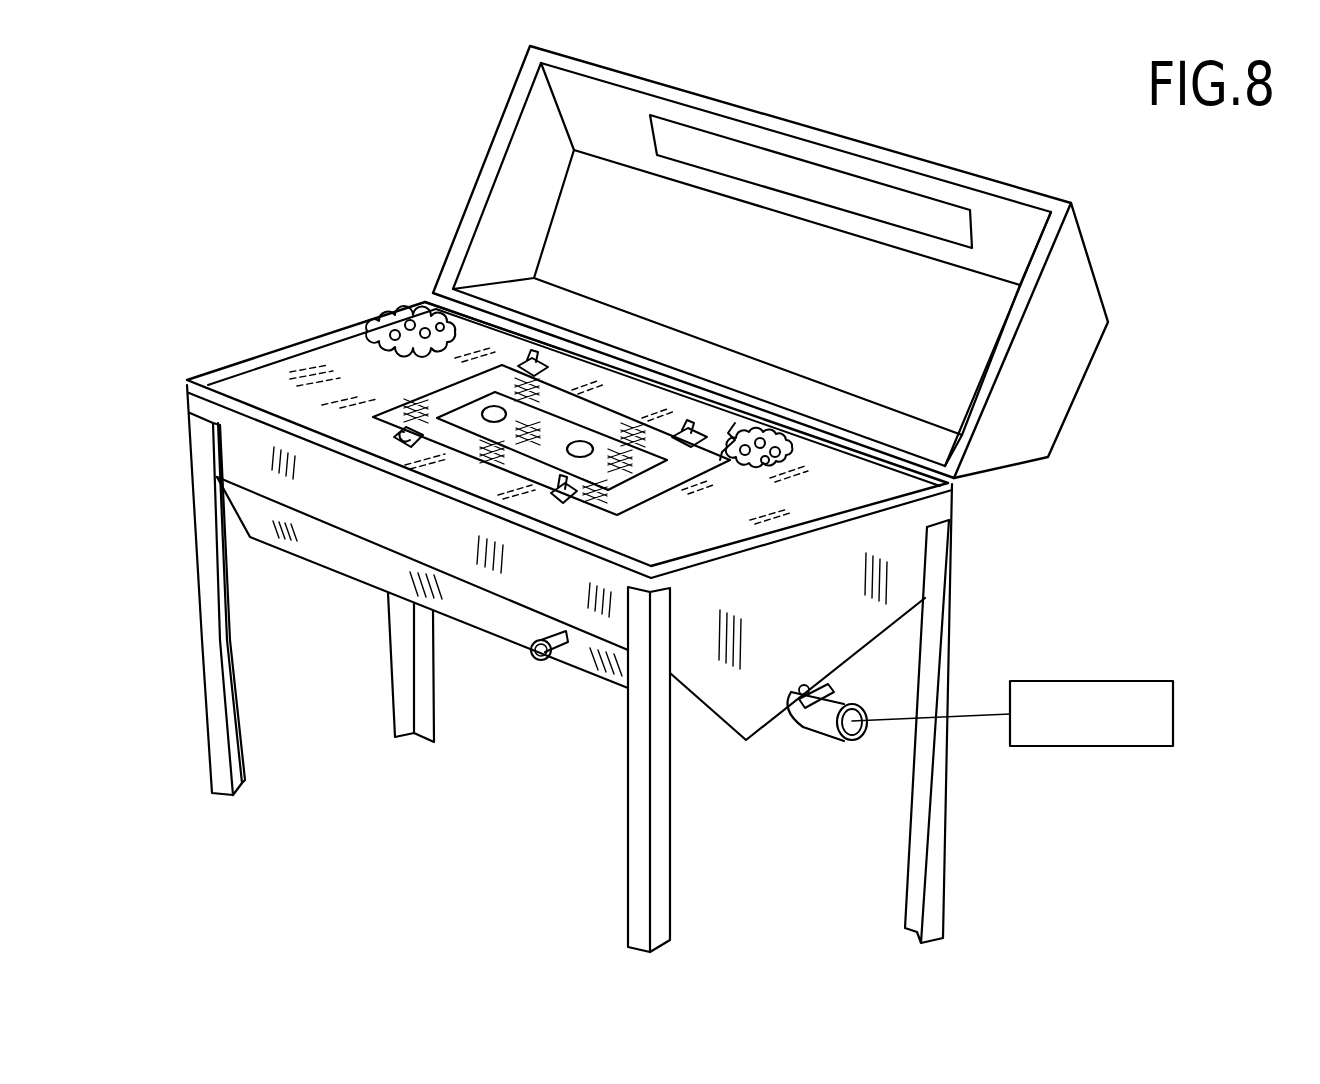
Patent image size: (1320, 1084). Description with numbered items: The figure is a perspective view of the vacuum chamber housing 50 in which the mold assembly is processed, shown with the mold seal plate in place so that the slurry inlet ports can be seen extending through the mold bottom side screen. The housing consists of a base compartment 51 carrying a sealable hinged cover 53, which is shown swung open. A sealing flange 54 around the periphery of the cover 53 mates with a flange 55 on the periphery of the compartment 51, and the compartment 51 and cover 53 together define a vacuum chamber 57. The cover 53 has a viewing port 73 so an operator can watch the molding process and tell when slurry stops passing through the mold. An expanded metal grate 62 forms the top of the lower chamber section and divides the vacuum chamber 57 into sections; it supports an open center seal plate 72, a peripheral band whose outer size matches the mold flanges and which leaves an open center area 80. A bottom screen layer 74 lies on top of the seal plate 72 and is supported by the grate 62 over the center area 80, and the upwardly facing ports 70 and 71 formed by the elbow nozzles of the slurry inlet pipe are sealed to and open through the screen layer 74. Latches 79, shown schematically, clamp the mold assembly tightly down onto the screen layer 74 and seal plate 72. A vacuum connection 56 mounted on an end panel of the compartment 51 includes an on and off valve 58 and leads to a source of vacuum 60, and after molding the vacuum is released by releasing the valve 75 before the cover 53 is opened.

The vacuum chamber housing 50 is at (584, 714).
The base compartment 51 is at (351, 517).
The sealable hinged cover 53 is at (506, 208).
The sealing flange 54 is at (505, 133).
The flange 55 is at (250, 366).
The vacuum connection 56 is at (815, 730).
The vacuum chamber 57 is at (435, 294).
The on and off valve 58 is at (822, 685).
The source of vacuum 60 is at (1006, 738).
The expanded metal grate 62 is at (770, 453).
The upwardly facing port 70 is at (490, 418).
The upwardly facing port 71 is at (563, 452).
The open center seal plate 72 is at (617, 515).
The viewing port 73 is at (777, 165).
The bottom screen layer 74 is at (647, 462).
The valve 75 is at (545, 663).
The latches 79 is at (535, 365).
The open center area 80 is at (593, 437).